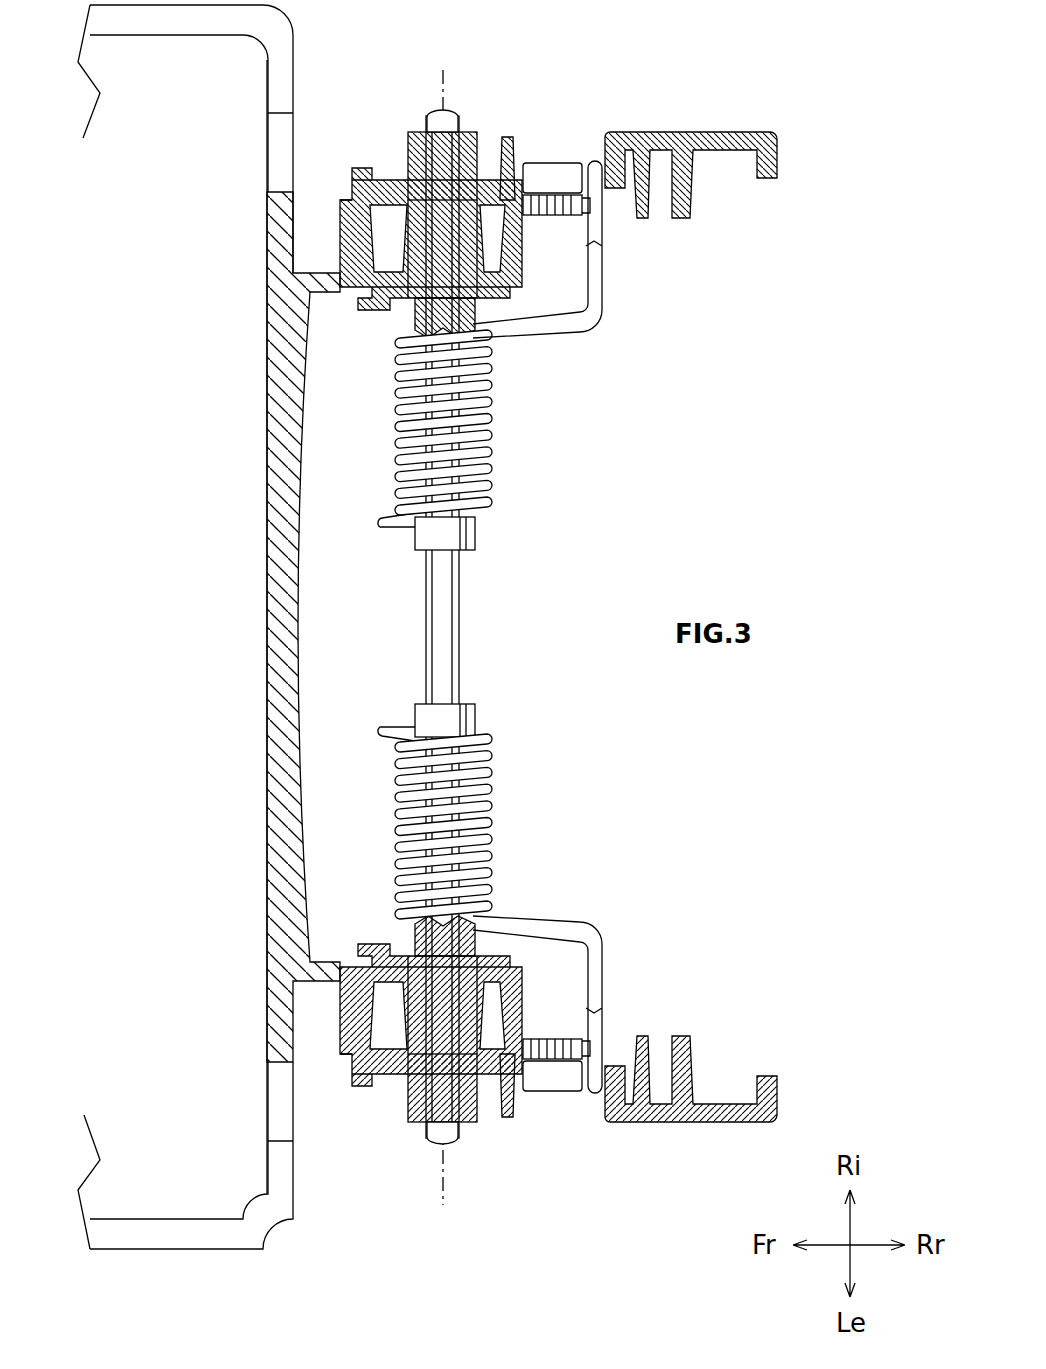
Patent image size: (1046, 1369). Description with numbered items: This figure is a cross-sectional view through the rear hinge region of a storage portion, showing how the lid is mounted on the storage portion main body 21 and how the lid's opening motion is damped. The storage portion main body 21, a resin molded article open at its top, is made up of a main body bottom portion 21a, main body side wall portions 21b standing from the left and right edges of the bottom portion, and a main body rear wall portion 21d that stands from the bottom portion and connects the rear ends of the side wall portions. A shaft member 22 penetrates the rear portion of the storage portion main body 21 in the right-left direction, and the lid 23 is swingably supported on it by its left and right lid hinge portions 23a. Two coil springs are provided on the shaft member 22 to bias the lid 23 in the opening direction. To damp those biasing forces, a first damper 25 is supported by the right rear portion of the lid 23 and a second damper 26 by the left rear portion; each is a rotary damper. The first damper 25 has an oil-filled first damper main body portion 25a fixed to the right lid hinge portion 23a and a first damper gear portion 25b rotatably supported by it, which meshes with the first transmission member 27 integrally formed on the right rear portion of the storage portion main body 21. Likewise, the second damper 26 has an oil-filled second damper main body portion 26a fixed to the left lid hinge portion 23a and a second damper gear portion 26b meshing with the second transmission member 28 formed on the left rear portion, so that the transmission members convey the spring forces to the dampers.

The storage portion main body 21 is at (196, 665).
The main body bottom portion 21a is at (190, 485).
The main body side wall portion 21b is at (158, 35).
The main body rear wall portion 21d is at (268, 600).
The shaft member 22 is at (462, 622).
The lid 23 is at (708, 637).
The lid hinge portion 23a is at (732, 134).
The first damper 25 is at (542, 130).
The first damper main body portion 25a is at (556, 175).
The first damper gear portion 25b is at (483, 172).
The second damper 26 is at (543, 1120).
The second damper main body portion 26a is at (553, 1078).
The second damper gear portion 26b is at (493, 1012).
The first transmission member 27 is at (337, 228).
The second transmission member 28 is at (337, 1026).